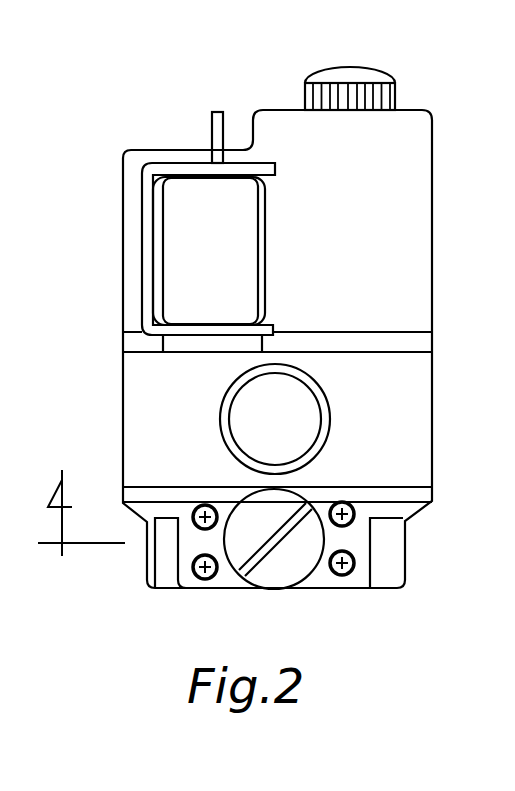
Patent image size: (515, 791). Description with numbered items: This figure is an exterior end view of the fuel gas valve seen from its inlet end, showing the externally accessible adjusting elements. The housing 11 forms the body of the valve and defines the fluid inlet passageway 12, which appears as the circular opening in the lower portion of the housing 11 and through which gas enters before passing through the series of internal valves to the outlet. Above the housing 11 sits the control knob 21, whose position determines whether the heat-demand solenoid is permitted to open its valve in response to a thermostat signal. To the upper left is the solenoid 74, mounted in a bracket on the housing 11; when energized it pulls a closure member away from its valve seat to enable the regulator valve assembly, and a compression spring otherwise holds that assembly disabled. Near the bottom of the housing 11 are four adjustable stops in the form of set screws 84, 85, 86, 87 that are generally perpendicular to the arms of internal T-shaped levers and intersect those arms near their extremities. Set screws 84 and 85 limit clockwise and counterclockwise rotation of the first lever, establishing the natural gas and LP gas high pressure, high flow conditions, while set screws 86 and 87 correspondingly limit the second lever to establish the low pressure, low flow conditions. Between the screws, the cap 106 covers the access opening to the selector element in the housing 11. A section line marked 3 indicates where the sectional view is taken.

The housing 11 is at (122, 428).
The fluid inlet passageway 12 is at (303, 412).
The control knob 21 is at (395, 90).
The solenoid 74 is at (263, 242).
The set screw 84 is at (205, 580).
The set screw 85 is at (198, 527).
The set screw 86 is at (341, 577).
The set screw 87 is at (350, 524).
The cap 106 is at (302, 590).
The section line for FIG. 3 is at (81, 501).